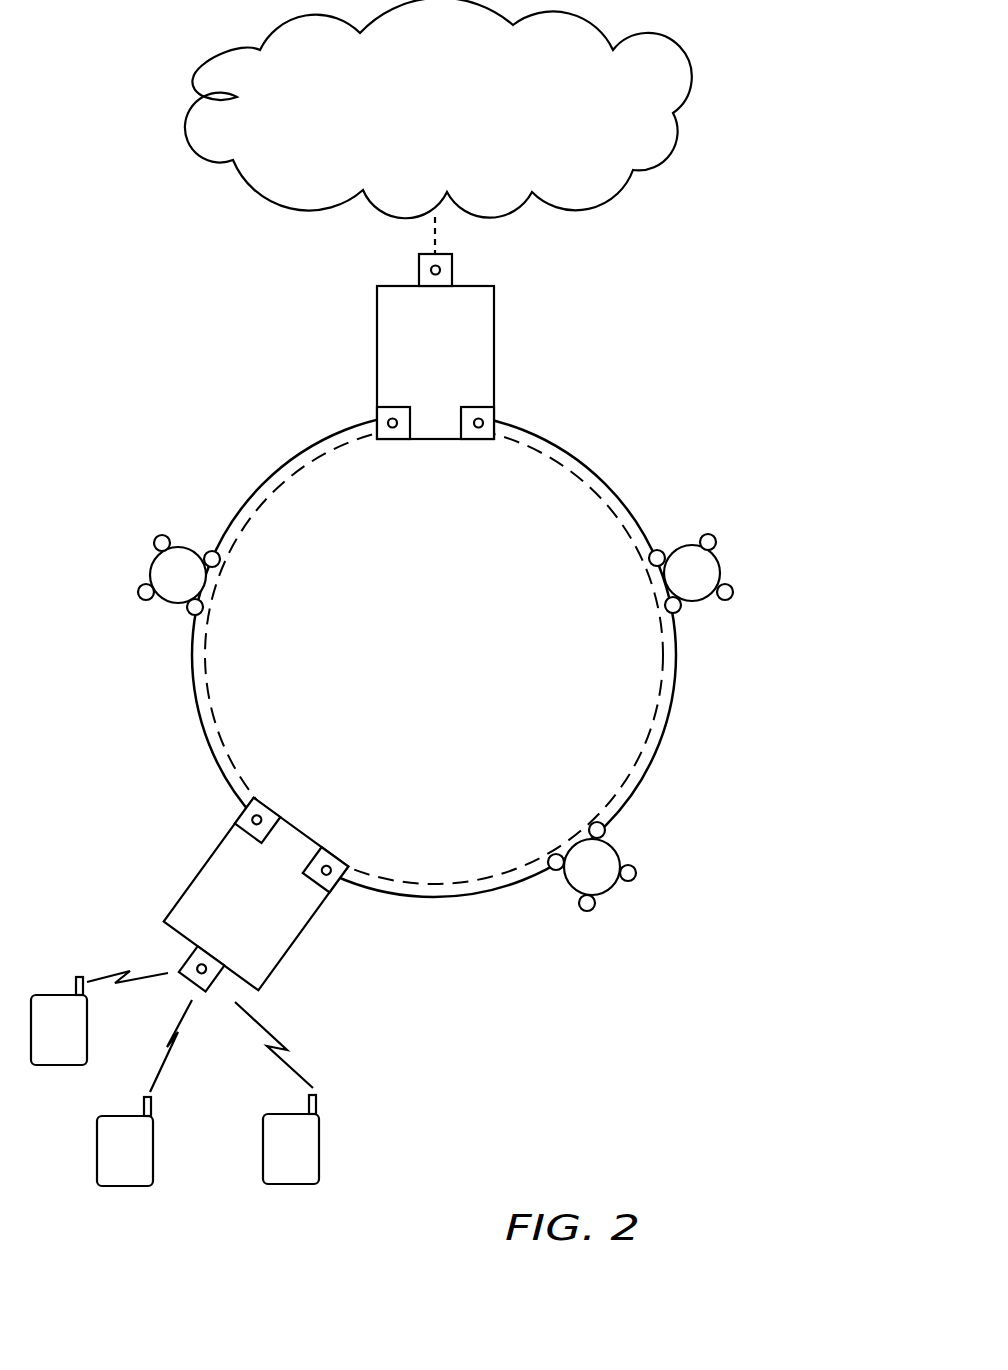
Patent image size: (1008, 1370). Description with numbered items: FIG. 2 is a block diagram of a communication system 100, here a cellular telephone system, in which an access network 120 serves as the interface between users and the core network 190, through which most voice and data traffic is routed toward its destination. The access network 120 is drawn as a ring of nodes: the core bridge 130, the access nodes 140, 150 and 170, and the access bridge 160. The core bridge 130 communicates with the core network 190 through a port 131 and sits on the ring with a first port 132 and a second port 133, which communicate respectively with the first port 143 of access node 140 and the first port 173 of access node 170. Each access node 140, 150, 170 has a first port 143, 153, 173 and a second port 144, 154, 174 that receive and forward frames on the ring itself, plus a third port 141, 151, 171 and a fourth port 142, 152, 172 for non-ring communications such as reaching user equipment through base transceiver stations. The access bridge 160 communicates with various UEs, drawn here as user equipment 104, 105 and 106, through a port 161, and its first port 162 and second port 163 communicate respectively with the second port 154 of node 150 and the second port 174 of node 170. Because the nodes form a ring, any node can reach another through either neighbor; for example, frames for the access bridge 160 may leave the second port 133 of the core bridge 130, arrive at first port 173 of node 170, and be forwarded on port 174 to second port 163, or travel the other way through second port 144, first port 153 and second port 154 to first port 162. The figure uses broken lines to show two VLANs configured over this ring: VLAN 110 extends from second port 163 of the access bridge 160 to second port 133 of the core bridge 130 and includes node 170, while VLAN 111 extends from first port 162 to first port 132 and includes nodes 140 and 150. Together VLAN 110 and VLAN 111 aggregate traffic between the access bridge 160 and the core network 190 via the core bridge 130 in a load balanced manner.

The communication system 100 is at (790, 214).
The user equipment 104 is at (57, 1067).
The user equipment 105 is at (124, 1187).
The user equipment 106 is at (290, 1185).
The VLAN 110 is at (212, 652).
The VLAN 111 is at (434, 655).
The access network 120 is at (546, 655).
The core bridge 130 is at (494, 343).
The port 131 is at (452, 270).
The first port 132 is at (494, 410).
The second port 133 is at (378, 410).
The access node 140 is at (720, 566).
The third port 141 is at (708, 534).
The fourth port 142 is at (733, 592).
The first port 143 is at (657, 550).
The second port 144 is at (680, 611).
The access node 150 is at (611, 888).
The third port 151 is at (587, 911).
The fourth port 152 is at (636, 873).
The first port 153 is at (605, 830).
The second port 154 is at (552, 868).
The access bridge 160 is at (289, 951).
The port 161 is at (210, 990).
The first port 162 is at (337, 888).
The second port 163 is at (236, 823).
The access node 170 is at (150, 572).
The third port 171 is at (162, 535).
The fourth port 172 is at (138, 594).
The first port 173 is at (212, 551).
The second port 174 is at (191, 614).
The core network 190 is at (193, 78).